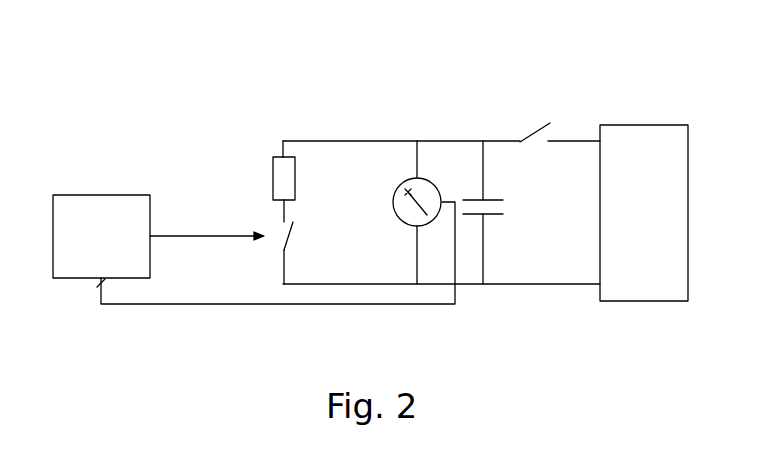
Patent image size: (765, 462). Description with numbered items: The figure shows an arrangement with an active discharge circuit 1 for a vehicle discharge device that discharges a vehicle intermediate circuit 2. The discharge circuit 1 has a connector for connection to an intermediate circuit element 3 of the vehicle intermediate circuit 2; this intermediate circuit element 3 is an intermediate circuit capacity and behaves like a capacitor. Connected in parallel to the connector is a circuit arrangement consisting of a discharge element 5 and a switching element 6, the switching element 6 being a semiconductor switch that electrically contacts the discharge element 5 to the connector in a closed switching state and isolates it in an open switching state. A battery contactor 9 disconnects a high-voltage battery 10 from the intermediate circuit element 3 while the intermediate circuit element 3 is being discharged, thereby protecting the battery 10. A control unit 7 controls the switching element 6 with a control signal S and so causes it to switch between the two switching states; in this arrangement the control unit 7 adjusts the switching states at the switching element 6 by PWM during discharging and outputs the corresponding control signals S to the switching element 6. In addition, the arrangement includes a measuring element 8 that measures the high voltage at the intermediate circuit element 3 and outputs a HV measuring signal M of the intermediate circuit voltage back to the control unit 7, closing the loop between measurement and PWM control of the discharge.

The active discharge circuit 1 is at (347, 305).
The vehicle intermediate circuit 2 is at (498, 286).
The intermediate circuit element 3 is at (520, 203).
The discharge element 5 is at (288, 172).
The switching element 6 is at (294, 233).
The control unit 7 is at (87, 227).
The measuring element 8 is at (423, 190).
The battery contactor 9 is at (534, 132).
The high-voltage battery 10 is at (645, 132).
The control signal S is at (207, 227).
The HV measuring signal M is at (276, 268).